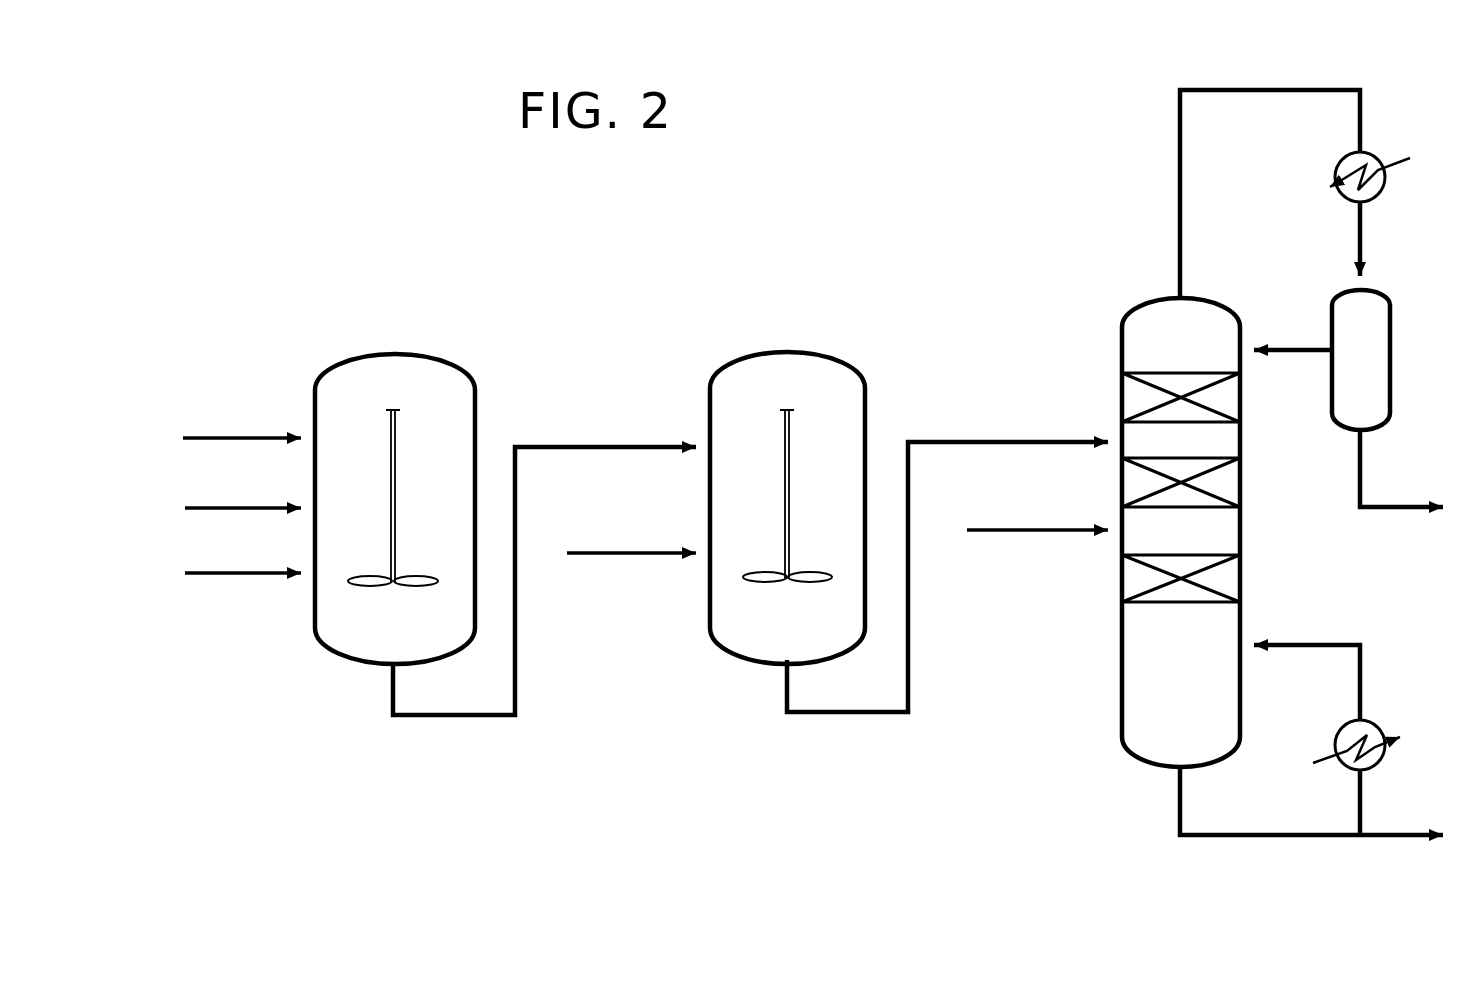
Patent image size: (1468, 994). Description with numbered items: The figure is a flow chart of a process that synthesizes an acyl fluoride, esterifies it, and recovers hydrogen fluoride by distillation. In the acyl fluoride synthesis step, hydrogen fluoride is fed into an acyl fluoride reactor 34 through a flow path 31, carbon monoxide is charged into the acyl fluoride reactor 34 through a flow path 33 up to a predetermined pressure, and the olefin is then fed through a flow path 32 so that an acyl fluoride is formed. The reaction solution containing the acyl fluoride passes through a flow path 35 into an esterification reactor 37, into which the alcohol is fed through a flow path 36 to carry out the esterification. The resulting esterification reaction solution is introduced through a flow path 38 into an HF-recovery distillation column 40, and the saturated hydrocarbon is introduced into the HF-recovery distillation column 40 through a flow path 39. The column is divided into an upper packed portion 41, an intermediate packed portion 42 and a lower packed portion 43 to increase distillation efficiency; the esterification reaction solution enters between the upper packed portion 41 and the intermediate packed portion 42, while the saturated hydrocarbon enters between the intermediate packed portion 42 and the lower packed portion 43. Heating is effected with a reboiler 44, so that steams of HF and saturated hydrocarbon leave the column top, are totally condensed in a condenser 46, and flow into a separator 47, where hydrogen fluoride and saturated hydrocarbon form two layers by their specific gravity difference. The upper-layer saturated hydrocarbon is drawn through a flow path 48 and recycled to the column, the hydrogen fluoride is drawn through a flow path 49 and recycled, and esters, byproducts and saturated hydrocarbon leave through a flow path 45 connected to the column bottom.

The flow path 31 is at (223, 440).
The flow path 32 is at (221, 510).
The flow path 33 is at (220, 575).
The acyl fluoride reactor 34 is at (438, 358).
The flow path 35 is at (456, 718).
The flow path 36 is at (592, 553).
The esterification reactor 37 is at (733, 361).
The flow path 38 is at (946, 441).
The flow path 39 is at (974, 529).
The HF-recovery distillation column 40 is at (1188, 519).
The upper packed portion 41 is at (1245, 408).
The intermediate packed portion 42 is at (1245, 492).
The lower packed portion 43 is at (1242, 590).
The reboiler 44 is at (1338, 728).
The flow path 45 is at (1402, 833).
The condenser 46 is at (1383, 190).
The separator 47 is at (1392, 335).
The flow path 48 is at (1280, 348).
The flow path 49 is at (1408, 506).